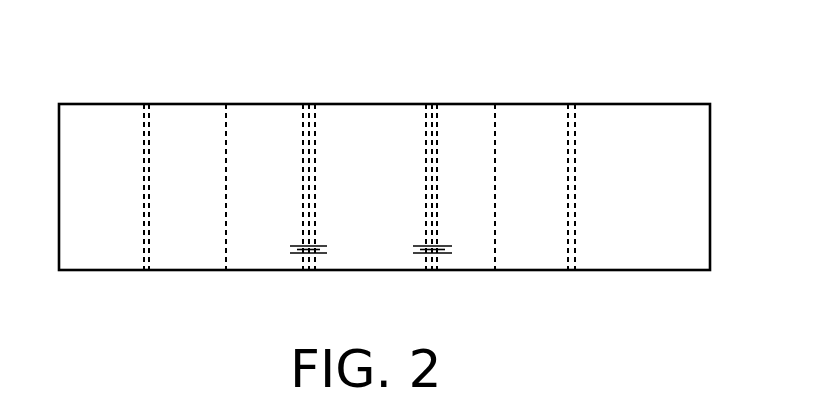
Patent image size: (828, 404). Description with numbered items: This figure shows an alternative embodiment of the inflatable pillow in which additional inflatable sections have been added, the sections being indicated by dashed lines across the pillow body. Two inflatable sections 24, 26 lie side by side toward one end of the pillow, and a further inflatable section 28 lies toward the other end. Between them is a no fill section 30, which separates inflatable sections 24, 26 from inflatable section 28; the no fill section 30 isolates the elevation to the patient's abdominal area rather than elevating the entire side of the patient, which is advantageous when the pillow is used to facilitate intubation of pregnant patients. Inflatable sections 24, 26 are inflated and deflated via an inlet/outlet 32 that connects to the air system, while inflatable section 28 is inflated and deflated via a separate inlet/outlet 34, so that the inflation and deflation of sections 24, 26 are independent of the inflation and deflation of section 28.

The inflatable section 24 is at (187, 118).
The inflatable section 26 is at (266, 118).
The inflatable section 28 is at (543, 118).
The no fill section 30 is at (382, 118).
The inlet/outlet 32 is at (292, 248).
The inlet/outlet 34 is at (447, 252).